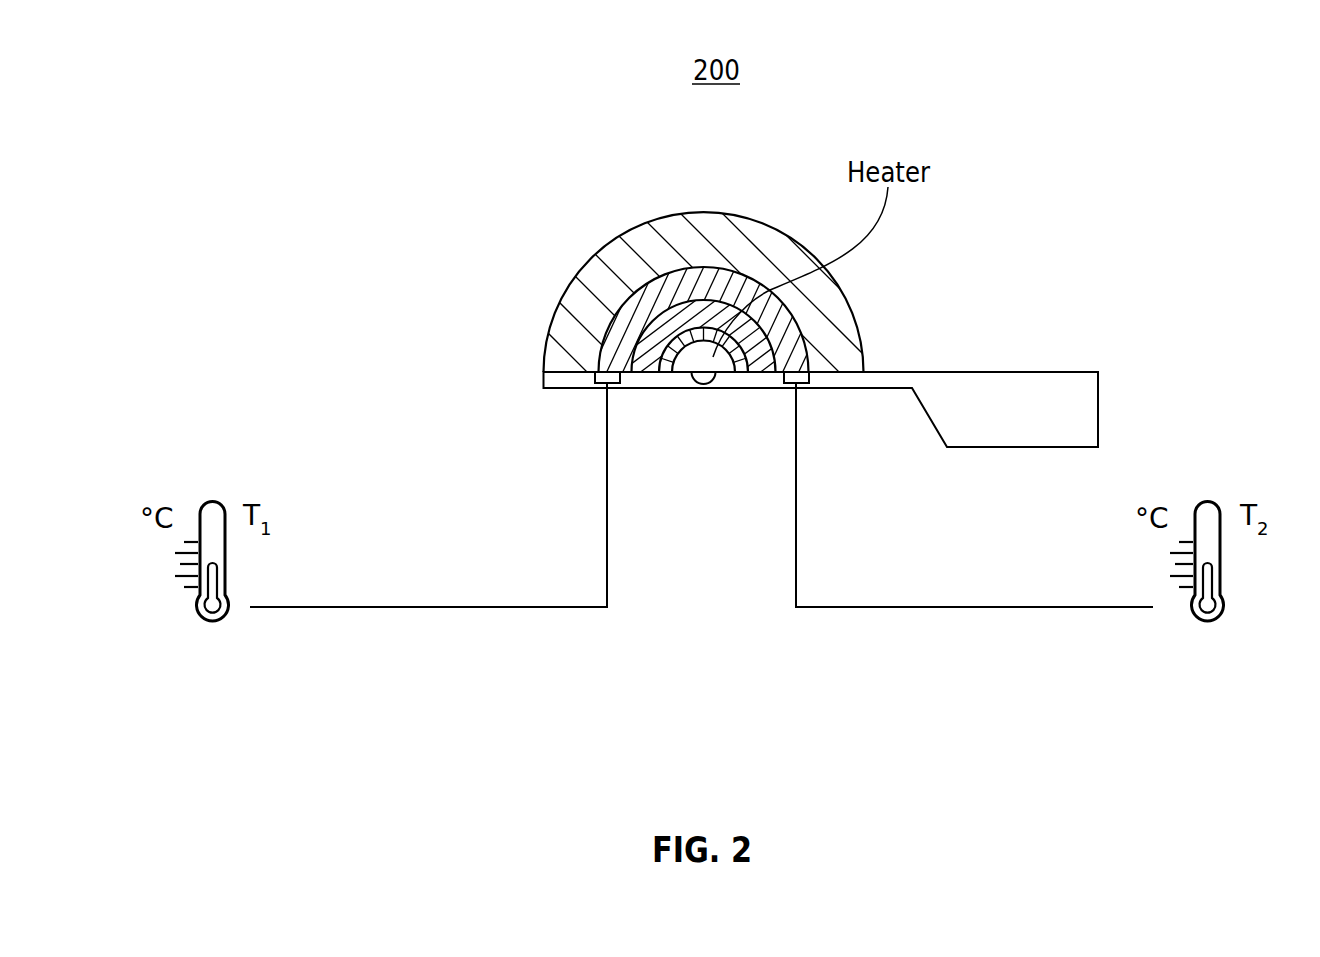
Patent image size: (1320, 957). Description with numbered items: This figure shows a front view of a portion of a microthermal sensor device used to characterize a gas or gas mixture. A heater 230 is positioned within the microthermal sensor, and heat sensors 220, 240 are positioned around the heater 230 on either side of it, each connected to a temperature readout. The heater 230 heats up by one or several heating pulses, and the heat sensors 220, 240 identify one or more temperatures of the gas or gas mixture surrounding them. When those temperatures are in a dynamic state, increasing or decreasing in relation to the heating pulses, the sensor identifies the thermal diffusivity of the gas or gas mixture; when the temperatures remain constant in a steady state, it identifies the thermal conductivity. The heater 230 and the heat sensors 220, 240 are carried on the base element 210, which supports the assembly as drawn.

The substrate 210 is at (992, 437).
The heat sensor 220 is at (796, 410).
The heater 230 is at (707, 388).
The heat sensor 240 is at (607, 420).